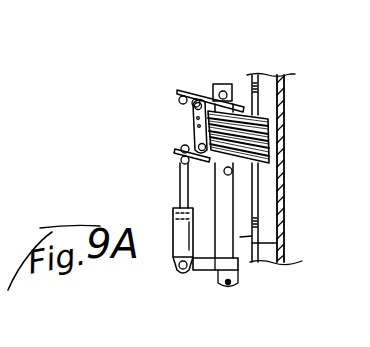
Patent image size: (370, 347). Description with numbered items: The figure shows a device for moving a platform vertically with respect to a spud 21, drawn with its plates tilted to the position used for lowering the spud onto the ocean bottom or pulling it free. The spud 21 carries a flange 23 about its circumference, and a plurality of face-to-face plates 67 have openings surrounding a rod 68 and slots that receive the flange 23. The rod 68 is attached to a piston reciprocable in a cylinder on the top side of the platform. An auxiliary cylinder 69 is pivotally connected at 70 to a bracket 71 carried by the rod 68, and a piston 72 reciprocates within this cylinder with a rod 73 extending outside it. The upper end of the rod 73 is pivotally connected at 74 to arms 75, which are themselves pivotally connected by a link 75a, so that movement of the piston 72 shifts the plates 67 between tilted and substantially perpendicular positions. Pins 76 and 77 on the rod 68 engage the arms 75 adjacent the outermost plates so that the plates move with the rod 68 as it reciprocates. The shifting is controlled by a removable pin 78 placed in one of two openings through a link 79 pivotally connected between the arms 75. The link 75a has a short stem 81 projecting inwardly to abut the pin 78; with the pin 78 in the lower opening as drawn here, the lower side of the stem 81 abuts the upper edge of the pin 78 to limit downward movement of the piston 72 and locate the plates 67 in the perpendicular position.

The spud 21 is at (260, 67).
The flange 23 is at (240, 235).
The plates 67 is at (272, 132).
The rod 68 is at (232, 215).
The auxiliary cylinder 69 is at (168, 252).
The pivotal connection 70 is at (182, 271).
The bracket 71 is at (201, 271).
The piston 72 is at (174, 210).
The rod 73 is at (180, 173).
The pivotal connection 74 is at (182, 149).
The arms 75 is at (199, 98).
The link 75a is at (182, 106).
The pin 76 is at (229, 84).
The pin 77 is at (231, 175).
The pin 78 is at (196, 124).
The link 79 is at (180, 102).
The stem 81 is at (268, 102).